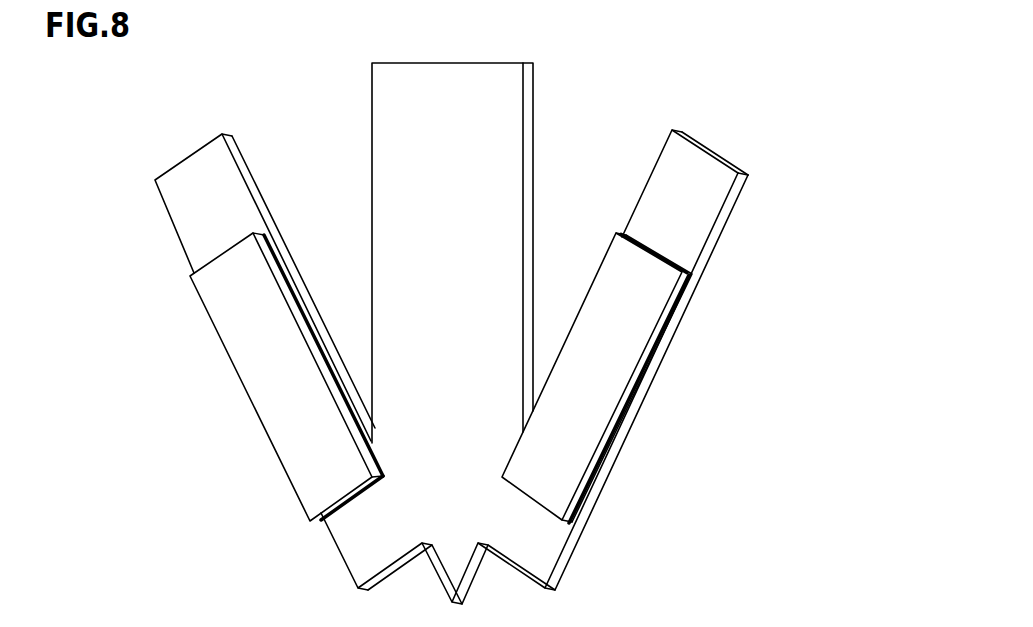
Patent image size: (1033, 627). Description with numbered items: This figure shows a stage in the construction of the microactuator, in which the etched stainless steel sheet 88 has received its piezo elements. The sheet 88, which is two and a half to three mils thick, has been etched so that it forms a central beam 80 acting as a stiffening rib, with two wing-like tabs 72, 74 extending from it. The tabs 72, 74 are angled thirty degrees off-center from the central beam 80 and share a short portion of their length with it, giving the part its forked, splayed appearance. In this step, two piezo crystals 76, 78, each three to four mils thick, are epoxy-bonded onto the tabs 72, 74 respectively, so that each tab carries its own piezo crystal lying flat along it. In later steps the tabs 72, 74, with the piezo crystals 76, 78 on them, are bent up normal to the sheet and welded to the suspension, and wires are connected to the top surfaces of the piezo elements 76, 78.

The stainless steel sheet 88 is at (378, 150).
The central beam 80 is at (478, 72).
The tab 72 is at (702, 160).
The tab 74 is at (198, 163).
The piezo crystal 76 is at (602, 405).
The piezo crystal 78 is at (268, 405).